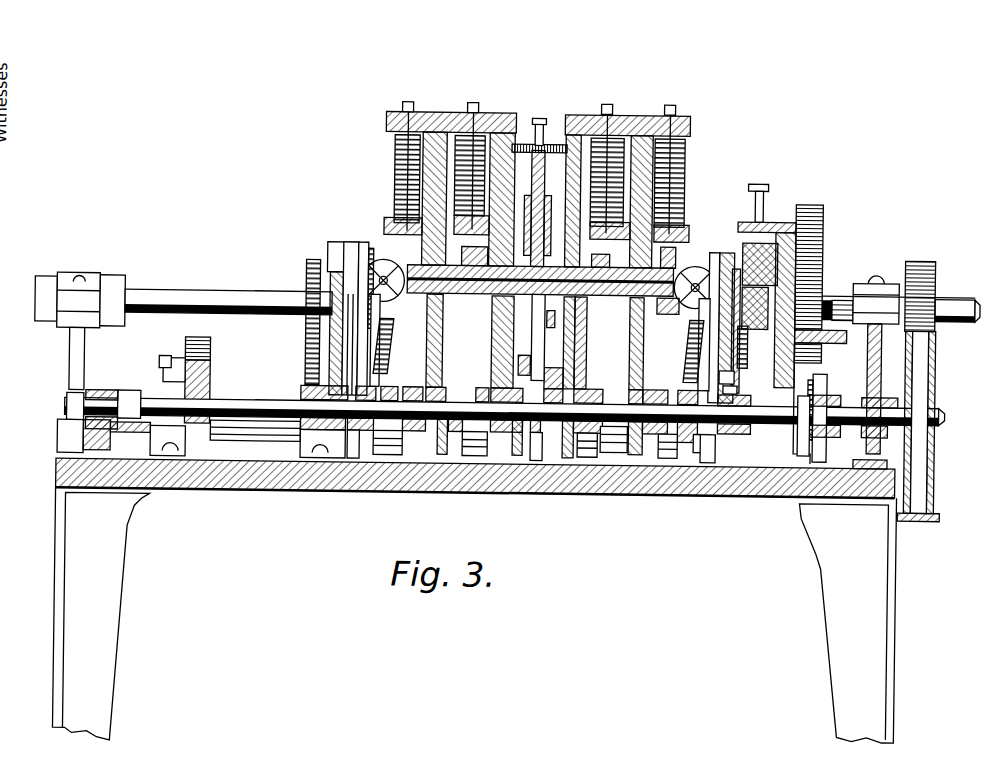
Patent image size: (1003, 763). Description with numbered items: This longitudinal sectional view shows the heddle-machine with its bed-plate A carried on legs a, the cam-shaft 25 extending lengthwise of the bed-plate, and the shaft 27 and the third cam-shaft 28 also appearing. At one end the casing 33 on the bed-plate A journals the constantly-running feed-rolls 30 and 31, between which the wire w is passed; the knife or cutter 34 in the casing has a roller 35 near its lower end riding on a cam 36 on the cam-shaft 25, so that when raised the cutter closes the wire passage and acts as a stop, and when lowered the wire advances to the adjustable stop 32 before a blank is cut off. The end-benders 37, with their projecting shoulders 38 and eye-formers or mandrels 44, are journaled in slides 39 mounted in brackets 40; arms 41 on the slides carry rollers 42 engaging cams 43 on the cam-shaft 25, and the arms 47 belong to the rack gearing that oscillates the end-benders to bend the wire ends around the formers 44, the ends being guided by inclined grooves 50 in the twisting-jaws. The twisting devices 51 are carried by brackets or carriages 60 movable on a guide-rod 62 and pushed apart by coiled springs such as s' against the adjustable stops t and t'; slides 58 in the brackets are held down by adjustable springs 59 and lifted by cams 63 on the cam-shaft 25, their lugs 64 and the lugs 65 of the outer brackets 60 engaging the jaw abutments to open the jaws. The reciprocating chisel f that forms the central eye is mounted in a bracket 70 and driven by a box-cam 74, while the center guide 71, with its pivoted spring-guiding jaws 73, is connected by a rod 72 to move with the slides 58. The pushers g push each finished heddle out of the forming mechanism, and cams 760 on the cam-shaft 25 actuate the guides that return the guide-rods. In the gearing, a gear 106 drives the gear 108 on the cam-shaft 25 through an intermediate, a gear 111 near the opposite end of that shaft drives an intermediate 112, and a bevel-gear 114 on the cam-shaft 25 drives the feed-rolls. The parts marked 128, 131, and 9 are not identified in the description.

The bed-plate A is at (250, 493).
The legs a is at (108, 615).
The cam-shaft 25 is at (62, 412).
The shaft 27 is at (186, 299).
The third cam-shaft 28 is at (948, 316).
The feed-roll 30 is at (748, 263).
The feed-roll 31 is at (760, 323).
The adjustable stop 32 is at (326, 258).
The frame or casing 33 is at (762, 222).
The knife or cutter 34 is at (734, 376).
The roller 35 is at (737, 389).
The cam 36 is at (745, 432).
The end-benders 37 is at (383, 272).
The projecting shoulders 38 is at (335, 262).
The slides 39 is at (390, 345).
The brackets 40 is at (388, 378).
The projections or arms 41 is at (348, 493).
The rollers 42 is at (386, 493).
The cams 43 is at (318, 493).
The eye-formers or mandrels 44 is at (320, 330).
The arms 47 is at (305, 262).
The inclined grooves 50 is at (304, 278).
The twisting devices 51 is at (475, 380).
The slides 58 is at (426, 113).
The adjustable springs 59 is at (458, 113).
The brackets or carriages 60 is at (470, 493).
The guide-rod 62 is at (210, 493).
The cams 63 is at (430, 493).
The lugs or projections 64 is at (320, 355).
The extending lugs or projections 65 is at (396, 222).
The bracket 70 is at (545, 493).
The center guide 71 is at (545, 118).
The rod 72 is at (551, 118).
The pivoted spring-guiding jaws 73 is at (552, 262).
The box-cam 74 is at (560, 493).
The cams 760 is at (413, 493).
The gear 106 is at (913, 256).
The gear 108 is at (936, 488).
The gear 111 is at (161, 376).
The intermediate 112 is at (183, 350).
The bevel-gear 114 is at (826, 395).
The gear 128 is at (819, 228).
The hub 131 is at (832, 288).
The pin 9 is at (541, 341).
The reciprocating former or chisel f is at (538, 337).
The pushers g is at (300, 352).
The coiled spring s' is at (540, 123).
The adjustable stop t is at (623, 560).
The adjustable stop t' is at (500, 543).
The wire w is at (953, 292).